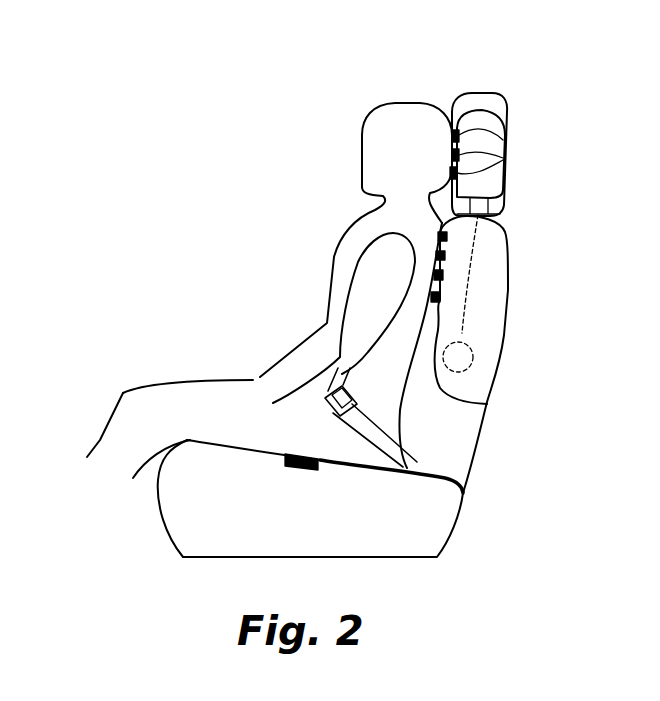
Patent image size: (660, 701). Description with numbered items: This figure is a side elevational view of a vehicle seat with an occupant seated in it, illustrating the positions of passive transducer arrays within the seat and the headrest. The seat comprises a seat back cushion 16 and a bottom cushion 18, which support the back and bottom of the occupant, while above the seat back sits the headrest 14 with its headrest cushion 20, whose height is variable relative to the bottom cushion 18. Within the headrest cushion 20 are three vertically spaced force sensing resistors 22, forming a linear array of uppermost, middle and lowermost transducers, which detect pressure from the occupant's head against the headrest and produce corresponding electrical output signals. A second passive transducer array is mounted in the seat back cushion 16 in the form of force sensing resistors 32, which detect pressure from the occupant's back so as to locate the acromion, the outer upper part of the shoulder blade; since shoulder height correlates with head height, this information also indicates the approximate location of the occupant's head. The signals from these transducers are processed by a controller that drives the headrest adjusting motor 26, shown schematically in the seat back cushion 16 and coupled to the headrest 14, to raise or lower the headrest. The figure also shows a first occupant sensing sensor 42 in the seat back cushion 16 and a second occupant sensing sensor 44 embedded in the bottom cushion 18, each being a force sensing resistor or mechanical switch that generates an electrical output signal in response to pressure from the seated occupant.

The headrest 14 is at (546, 134).
The headrest cushion 20 is at (483, 100).
The force sensing resistors 22 is at (457, 173).
The force sensing resistors 32 is at (443, 275).
The seat back cushion 16 is at (447, 317).
The headrest adjusting motor 26 is at (475, 347).
The first occupant sensing sensor 42 is at (443, 383).
The bottom cushion 18 is at (240, 500).
The second occupant sensing sensor 44 is at (300, 468).